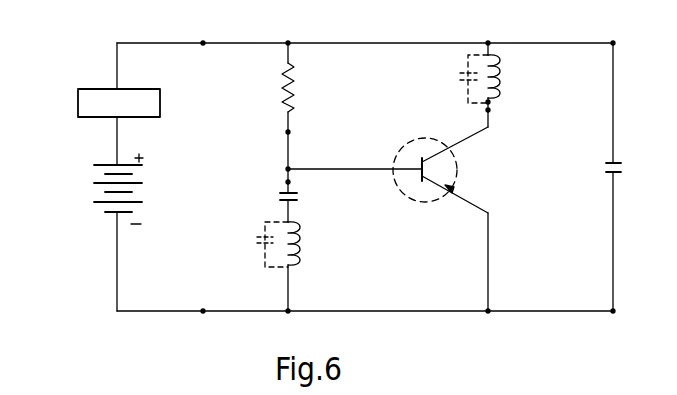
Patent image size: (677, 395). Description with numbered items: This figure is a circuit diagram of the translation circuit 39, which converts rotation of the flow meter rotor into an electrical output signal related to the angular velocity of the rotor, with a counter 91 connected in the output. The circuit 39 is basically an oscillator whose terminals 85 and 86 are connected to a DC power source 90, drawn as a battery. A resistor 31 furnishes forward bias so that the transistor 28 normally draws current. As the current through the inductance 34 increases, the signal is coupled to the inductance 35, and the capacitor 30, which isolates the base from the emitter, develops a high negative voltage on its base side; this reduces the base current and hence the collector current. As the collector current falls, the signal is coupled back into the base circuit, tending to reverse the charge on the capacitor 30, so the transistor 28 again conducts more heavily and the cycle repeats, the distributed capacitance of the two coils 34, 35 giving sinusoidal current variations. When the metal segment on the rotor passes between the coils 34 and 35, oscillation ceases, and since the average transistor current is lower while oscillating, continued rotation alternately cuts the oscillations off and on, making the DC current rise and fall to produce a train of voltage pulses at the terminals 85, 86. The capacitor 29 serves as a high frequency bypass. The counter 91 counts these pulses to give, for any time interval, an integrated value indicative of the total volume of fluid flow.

The transistor 28 is at (420, 136).
The capacitor 29 is at (619, 162).
The capacitor 30 is at (297, 194).
The resistor 31 is at (288, 108).
The coil 34 is at (500, 73).
The coil 35 is at (300, 250).
The circuit 39 is at (372, 303).
The terminal 85 is at (203, 43).
The terminal 86 is at (203, 311).
The DC power source 90 is at (132, 183).
The counter 91 is at (160, 97).